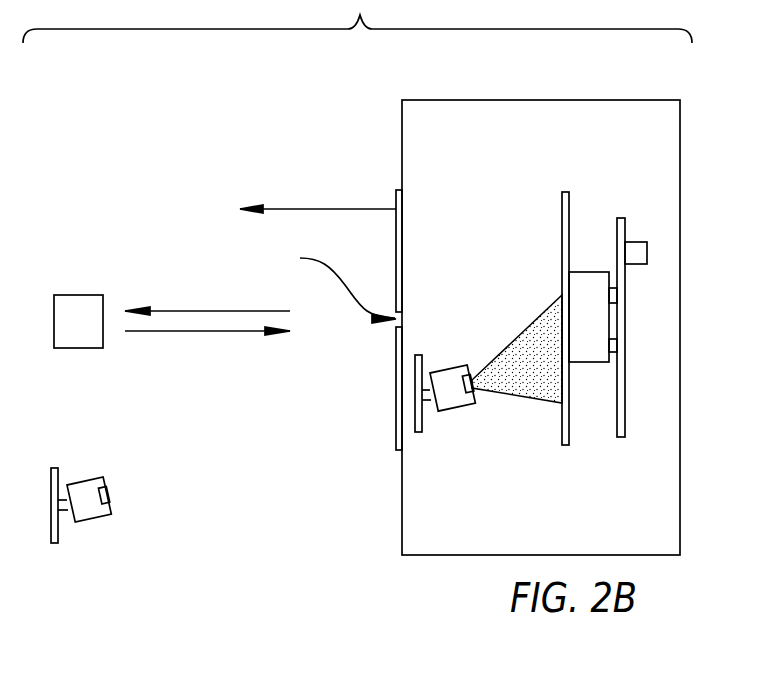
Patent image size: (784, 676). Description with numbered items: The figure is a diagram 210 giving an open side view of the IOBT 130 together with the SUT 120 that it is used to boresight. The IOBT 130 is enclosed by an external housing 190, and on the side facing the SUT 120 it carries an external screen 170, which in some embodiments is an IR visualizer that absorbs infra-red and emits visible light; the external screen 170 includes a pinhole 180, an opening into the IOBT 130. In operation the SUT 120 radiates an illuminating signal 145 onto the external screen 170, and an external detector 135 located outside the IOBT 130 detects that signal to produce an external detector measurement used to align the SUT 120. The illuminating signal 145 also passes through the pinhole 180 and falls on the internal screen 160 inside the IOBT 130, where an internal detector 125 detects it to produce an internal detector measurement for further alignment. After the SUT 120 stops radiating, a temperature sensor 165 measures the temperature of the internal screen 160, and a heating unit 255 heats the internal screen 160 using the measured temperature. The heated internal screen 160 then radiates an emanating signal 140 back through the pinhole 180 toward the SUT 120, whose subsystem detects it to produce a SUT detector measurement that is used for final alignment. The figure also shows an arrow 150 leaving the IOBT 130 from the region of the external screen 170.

The diagram 210 is at (357, 21).
The IOBT 130 is at (683, 137).
The external housing 190 is at (650, 187).
The external screen 170 is at (396, 427).
The output light beam 150 is at (325, 208).
The pinhole 180 is at (329, 284).
The emanating signal 140 is at (230, 311).
The illuminating signal 145 is at (192, 331).
The SUT 120 is at (72, 295).
The external detector 135 is at (96, 521).
The internal detector 125 is at (457, 412).
The internal screen 160 is at (566, 445).
The heating unit 255 is at (588, 362).
The temperature sensor 165 is at (647, 253).